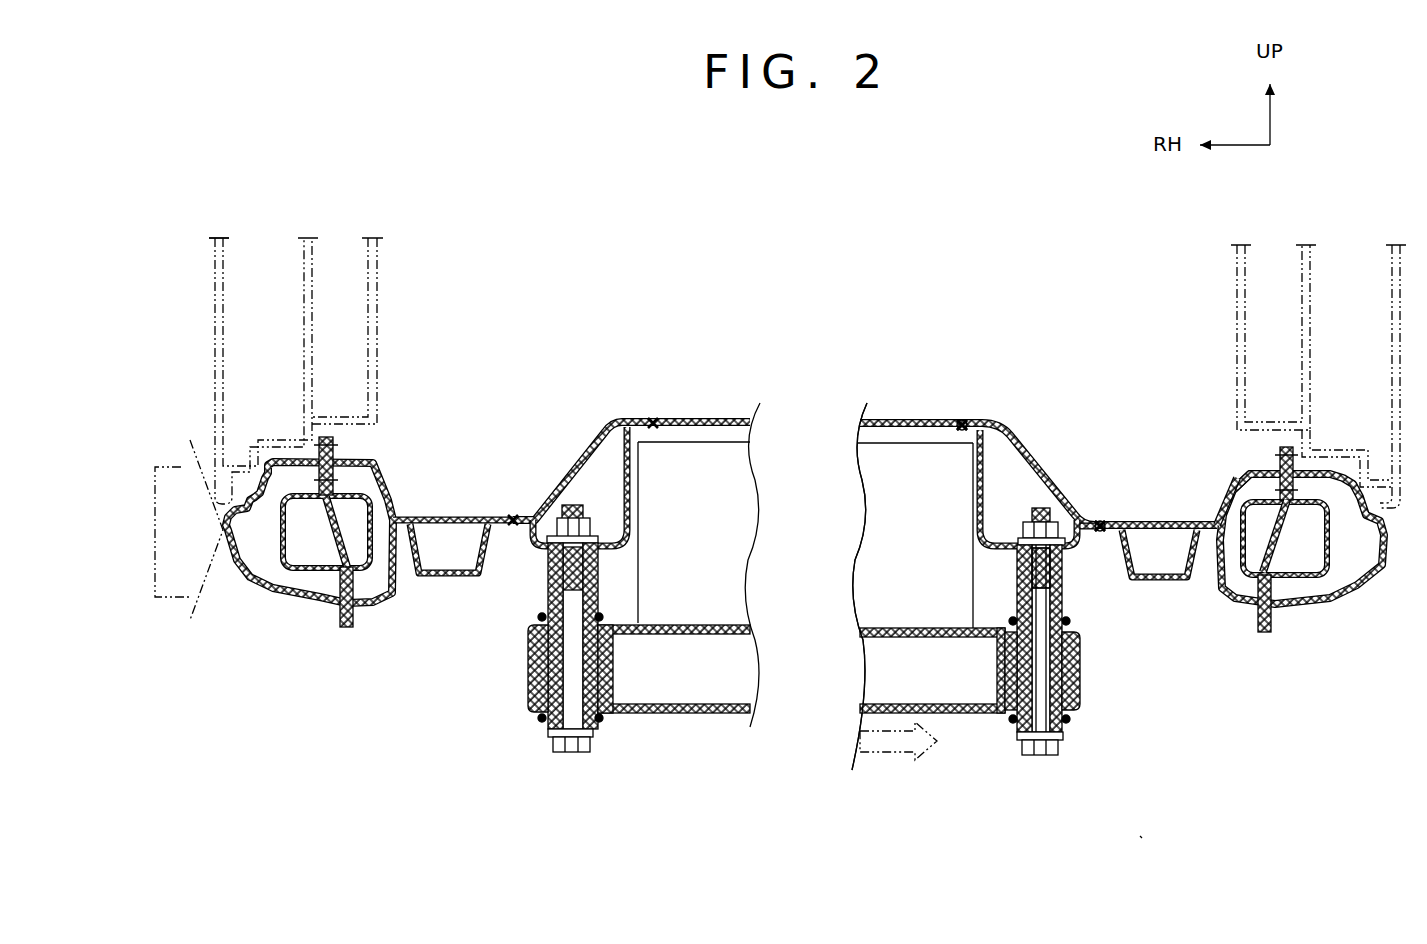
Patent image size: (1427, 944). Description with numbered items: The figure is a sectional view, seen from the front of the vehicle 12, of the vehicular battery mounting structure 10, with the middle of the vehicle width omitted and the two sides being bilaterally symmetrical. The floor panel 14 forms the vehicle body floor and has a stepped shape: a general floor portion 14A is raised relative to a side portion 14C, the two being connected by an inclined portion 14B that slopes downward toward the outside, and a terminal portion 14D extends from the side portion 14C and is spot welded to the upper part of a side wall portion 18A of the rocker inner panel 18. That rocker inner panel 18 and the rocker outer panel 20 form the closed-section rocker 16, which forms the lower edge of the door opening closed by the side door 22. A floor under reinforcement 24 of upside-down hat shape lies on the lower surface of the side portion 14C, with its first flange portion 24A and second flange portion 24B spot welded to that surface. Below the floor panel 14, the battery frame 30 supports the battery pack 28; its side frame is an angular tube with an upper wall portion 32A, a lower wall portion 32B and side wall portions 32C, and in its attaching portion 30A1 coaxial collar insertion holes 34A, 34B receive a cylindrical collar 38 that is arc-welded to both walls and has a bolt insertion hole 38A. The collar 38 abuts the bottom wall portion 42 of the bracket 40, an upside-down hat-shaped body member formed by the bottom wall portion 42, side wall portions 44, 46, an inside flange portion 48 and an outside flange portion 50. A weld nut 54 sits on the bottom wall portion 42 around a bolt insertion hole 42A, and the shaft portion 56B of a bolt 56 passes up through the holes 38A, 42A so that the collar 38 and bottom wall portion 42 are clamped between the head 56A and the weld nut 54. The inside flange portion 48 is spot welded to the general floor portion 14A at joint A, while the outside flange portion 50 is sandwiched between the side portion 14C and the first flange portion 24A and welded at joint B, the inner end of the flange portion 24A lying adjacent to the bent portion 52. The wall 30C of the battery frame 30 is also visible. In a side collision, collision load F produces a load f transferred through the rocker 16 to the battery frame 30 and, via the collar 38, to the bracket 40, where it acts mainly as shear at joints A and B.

The vehicular battery mounting structure 10 is at (1143, 838).
The vehicle 12 is at (187, 229).
The floor panel 14 is at (1041, 530).
The general floor portion 14A is at (890, 412).
The inclined portion 14B is at (1033, 463).
The side portion 14C is at (1163, 523).
The terminal portion 14D is at (1223, 510).
The rocker 16 is at (346, 631).
The rocker inner panel 18 is at (378, 603).
The side wall portion 18A is at (1220, 507).
The rocker outer panel 20 is at (282, 592).
The side door 22 is at (392, 316).
The floor under reinforcement 24 is at (820, 600).
The first flange portion 24A is at (1130, 572).
The second flange portion 24B is at (1200, 562).
The battery pack 28 is at (705, 418).
The battery frame 30 is at (870, 631).
The attaching portion 30A1 is at (526, 726).
The front wall of cross member 30C is at (877, 620).
The upper wall portion 32A is at (1020, 624).
The lower wall portion 32B is at (1005, 734).
The side wall portions 32C is at (997, 651).
The upper collar insertion hole 34A is at (1080, 652).
The lower collar insertion hole 34B is at (1084, 722).
The collar 38 is at (805, 631).
The bolt insertion hole 38A is at (1040, 683).
The bracket 40 is at (805, 527).
The bottom wall portion 42 is at (1020, 537).
The bolt insertion hole 42A is at (1018, 541).
The side wall portion 44 is at (993, 512).
The side wall portion 46 is at (1082, 562).
The inside flange portion 48 is at (962, 418).
The outside flange portion 50 is at (1087, 512).
The bent portion 52 is at (1087, 537).
The weld nut 54 is at (556, 527).
The bolt 56 is at (838, 698).
The head 56A is at (1035, 757).
The shaft portion 56B is at (1020, 591).
The joint A is at (968, 419).
The joint B is at (1103, 511).
The collision load F is at (181, 467).
The load f is at (873, 757).